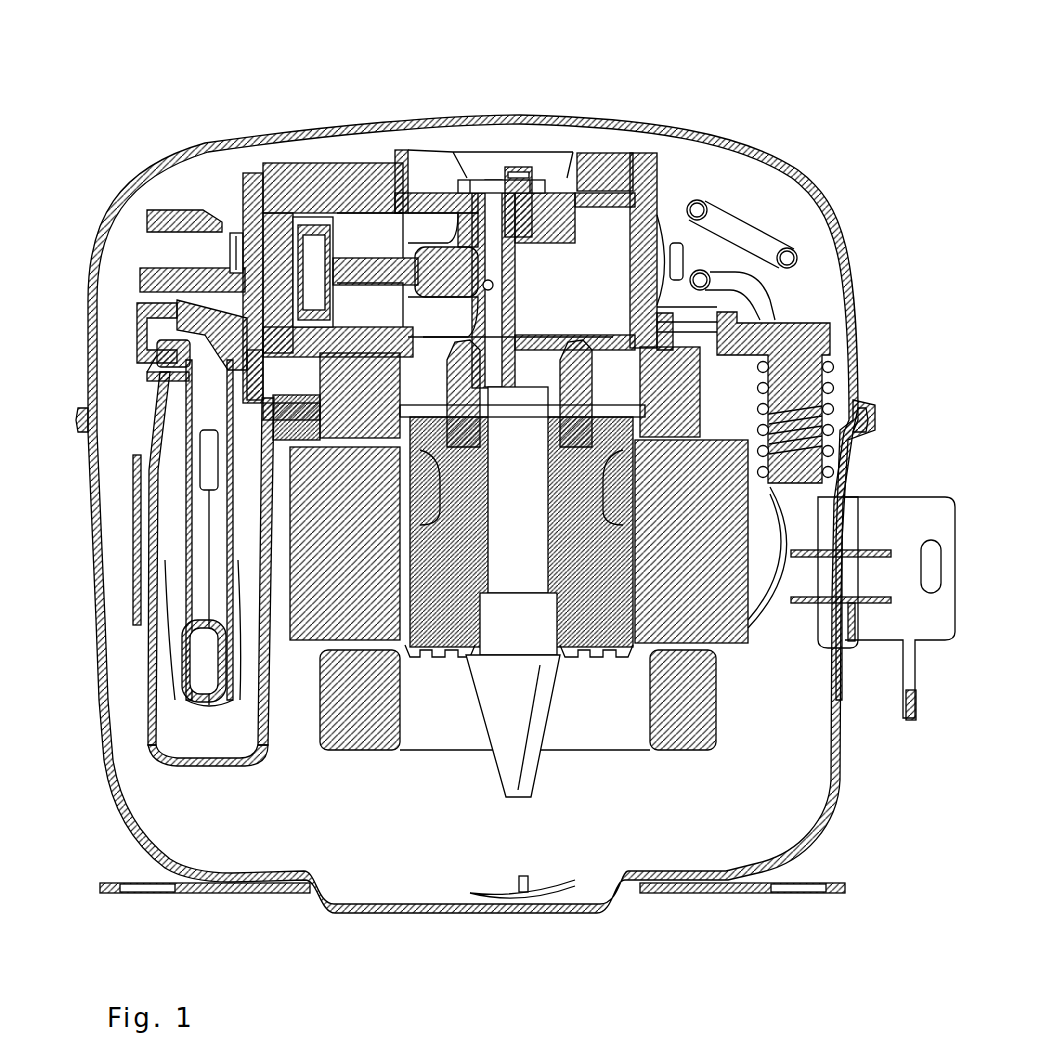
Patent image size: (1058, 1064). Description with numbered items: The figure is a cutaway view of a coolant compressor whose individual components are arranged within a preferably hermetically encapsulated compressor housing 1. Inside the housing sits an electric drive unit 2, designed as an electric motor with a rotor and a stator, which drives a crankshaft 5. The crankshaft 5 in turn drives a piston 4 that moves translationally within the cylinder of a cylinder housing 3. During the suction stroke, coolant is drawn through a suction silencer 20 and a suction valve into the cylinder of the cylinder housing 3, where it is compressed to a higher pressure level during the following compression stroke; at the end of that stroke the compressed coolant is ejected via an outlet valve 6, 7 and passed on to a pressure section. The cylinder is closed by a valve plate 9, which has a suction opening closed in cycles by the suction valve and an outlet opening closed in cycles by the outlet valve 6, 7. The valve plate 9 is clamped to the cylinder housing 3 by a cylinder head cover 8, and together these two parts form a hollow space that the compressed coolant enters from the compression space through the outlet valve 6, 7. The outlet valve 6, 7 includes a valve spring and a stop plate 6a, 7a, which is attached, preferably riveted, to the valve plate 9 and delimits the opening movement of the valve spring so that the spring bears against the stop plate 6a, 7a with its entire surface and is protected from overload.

The compressor housing 1 is at (713, 138).
The electric drive unit 2 is at (465, 720).
The cylinder housing 3 is at (480, 231).
The piston 4 is at (285, 213).
The crankshaft 5 is at (530, 180).
The outlet valve 6 is at (132, 194).
The outlet valve 7 is at (148, 208).
The stop plate 6a is at (182, 147).
The stop plate 7a is at (233, 235).
The cylinder head cover 8 is at (144, 196).
The valve plate 9 is at (255, 200).
The suction silencer 20 is at (150, 700).